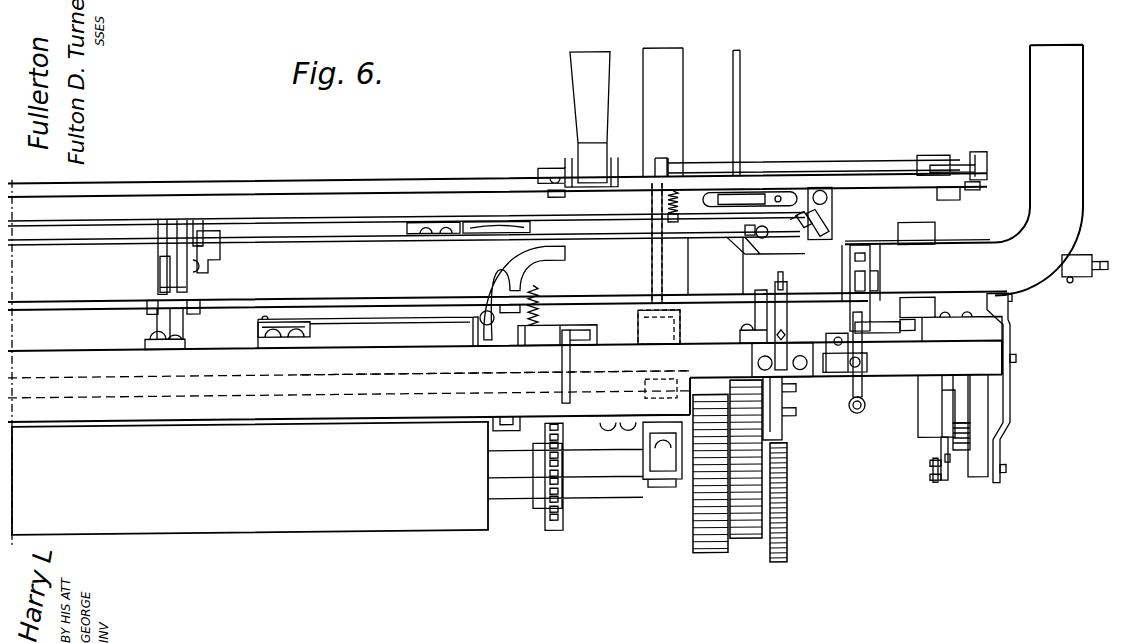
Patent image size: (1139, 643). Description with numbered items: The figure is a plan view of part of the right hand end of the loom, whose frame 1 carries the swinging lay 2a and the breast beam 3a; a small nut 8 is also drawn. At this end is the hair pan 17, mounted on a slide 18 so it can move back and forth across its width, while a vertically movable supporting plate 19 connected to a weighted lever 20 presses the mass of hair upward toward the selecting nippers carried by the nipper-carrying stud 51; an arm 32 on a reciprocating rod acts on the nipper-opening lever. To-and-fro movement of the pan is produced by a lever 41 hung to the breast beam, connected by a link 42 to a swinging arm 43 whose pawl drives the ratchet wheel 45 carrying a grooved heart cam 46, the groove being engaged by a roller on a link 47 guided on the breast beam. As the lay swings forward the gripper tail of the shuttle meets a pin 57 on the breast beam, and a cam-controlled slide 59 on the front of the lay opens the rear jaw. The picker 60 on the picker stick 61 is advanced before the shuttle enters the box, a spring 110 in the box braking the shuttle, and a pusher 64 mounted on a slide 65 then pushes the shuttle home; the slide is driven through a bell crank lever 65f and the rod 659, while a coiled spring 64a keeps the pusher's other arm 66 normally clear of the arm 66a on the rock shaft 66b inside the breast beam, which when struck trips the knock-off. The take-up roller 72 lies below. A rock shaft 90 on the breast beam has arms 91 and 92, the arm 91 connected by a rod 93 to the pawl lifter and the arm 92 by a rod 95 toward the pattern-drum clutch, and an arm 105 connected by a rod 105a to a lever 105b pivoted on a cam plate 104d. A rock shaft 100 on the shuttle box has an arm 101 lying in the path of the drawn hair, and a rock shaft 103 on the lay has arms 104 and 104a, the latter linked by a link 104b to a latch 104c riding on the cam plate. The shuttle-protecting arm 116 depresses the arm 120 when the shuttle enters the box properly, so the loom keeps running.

The frame 1 is at (663, 112).
The swinging lay 2a is at (283, 187).
The breast beam 3a is at (505, 381).
The nut 8 is at (907, 324).
The hair pan 17 is at (964, 171).
The slide 18 is at (916, 233).
The supporting plate 19 is at (947, 280).
The weighted lever 20 is at (1085, 275).
The arm 32 is at (860, 401).
The lever 41 is at (918, 394).
The link 42 is at (931, 478).
The swinging arm 43 is at (948, 486).
The ratchet wheel 45 is at (966, 446).
The grooved heart cam 46 is at (970, 426).
The link 47 is at (1010, 415).
The nipper-carrying stud 51 is at (871, 289).
The pin 57 is at (788, 308).
The slide 59 is at (495, 232).
The picker 60 is at (948, 210).
The picker stick 61 is at (968, 170).
The pusher 64 is at (522, 293).
The coiled spring 64a is at (540, 321).
The slide 65 is at (473, 340).
The bell crank lever 65f is at (311, 338).
The rod 659 is at (390, 332).
The arm 66 is at (557, 335).
The arm 66a is at (571, 364).
The rock shaft 66b is at (495, 379).
The take-up roller 72 is at (250, 478).
The rock shaft 90 is at (100, 305).
The arm 91 is at (785, 286).
The arm 92 is at (750, 306).
The rod 93 is at (773, 290).
The rod 95 is at (741, 118).
The rock shaft 100 is at (834, 224).
The arm 101 is at (831, 236).
The rock shaft 103 is at (86, 245).
The arm 104 is at (796, 236).
The arm 104a is at (213, 260).
The link 104b is at (196, 274).
The latch 104c is at (153, 286).
The cam plate 104d is at (178, 324).
The arm 105 is at (155, 335).
The rod 105a is at (160, 271).
The lever 105b is at (157, 231).
The spring 110 is at (750, 199).
The arm 116 is at (672, 231).
The arm 120 is at (652, 279).